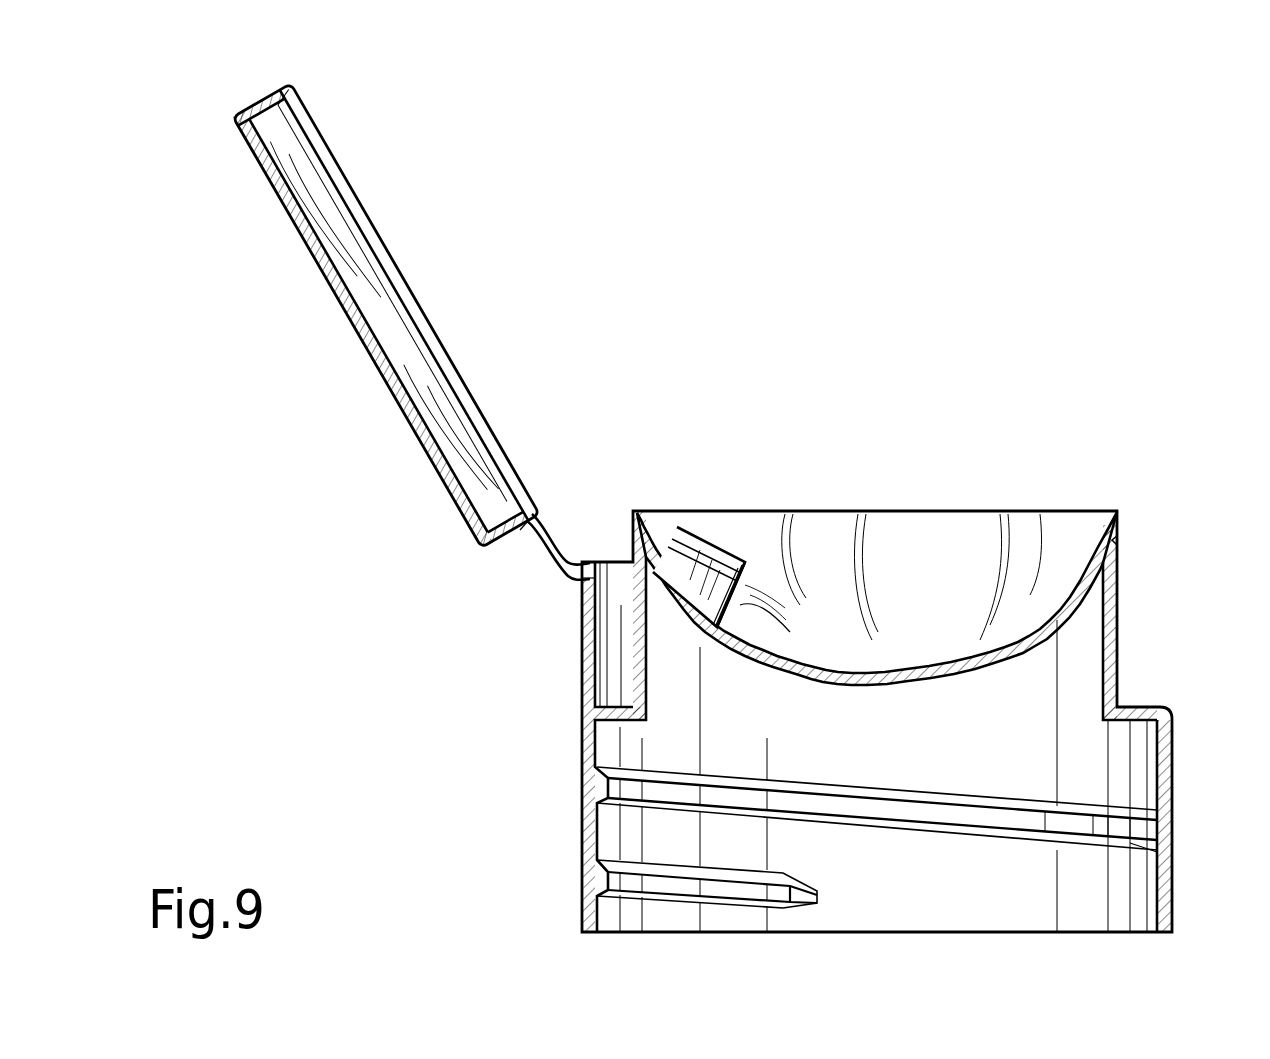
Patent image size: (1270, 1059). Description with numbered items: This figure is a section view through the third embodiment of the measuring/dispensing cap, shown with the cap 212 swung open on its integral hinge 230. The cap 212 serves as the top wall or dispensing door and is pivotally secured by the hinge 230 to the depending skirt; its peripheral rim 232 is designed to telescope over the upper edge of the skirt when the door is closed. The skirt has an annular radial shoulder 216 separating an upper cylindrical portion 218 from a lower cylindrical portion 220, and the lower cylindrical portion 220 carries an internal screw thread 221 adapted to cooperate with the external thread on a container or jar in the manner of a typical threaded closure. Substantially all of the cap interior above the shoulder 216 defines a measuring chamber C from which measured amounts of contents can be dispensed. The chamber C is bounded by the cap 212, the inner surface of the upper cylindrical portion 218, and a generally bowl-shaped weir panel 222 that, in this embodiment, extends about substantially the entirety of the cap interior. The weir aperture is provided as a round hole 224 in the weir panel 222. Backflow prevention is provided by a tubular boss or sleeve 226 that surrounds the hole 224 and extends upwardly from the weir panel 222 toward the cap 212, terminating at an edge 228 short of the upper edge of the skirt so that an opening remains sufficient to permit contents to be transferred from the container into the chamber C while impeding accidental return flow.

The cap 212 is at (397, 278).
The annular radial shoulder 216 is at (1127, 708).
The upper cylindrical portion 218 is at (1118, 632).
The lower cylindrical portion 220 is at (1172, 798).
The internal screw thread 221 is at (938, 828).
The weir panel 222 is at (887, 523).
The round hole 224 is at (694, 572).
The tubular boss or sleeve 226 is at (760, 607).
The edge 228 is at (743, 557).
The hinge 230 is at (541, 548).
The peripheral rim 232 is at (254, 92).
The measuring chamber C is at (950, 570).